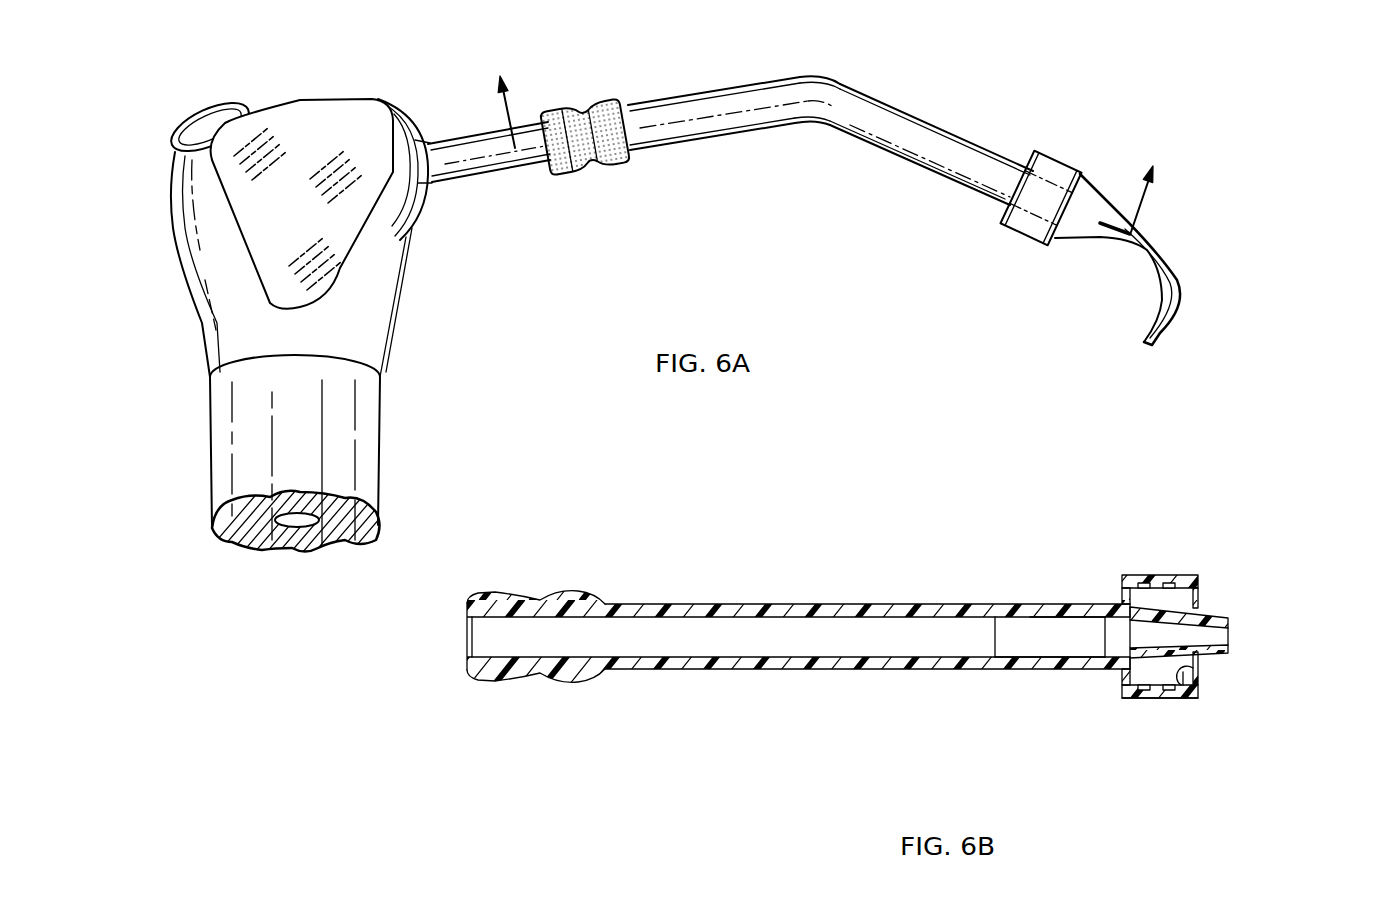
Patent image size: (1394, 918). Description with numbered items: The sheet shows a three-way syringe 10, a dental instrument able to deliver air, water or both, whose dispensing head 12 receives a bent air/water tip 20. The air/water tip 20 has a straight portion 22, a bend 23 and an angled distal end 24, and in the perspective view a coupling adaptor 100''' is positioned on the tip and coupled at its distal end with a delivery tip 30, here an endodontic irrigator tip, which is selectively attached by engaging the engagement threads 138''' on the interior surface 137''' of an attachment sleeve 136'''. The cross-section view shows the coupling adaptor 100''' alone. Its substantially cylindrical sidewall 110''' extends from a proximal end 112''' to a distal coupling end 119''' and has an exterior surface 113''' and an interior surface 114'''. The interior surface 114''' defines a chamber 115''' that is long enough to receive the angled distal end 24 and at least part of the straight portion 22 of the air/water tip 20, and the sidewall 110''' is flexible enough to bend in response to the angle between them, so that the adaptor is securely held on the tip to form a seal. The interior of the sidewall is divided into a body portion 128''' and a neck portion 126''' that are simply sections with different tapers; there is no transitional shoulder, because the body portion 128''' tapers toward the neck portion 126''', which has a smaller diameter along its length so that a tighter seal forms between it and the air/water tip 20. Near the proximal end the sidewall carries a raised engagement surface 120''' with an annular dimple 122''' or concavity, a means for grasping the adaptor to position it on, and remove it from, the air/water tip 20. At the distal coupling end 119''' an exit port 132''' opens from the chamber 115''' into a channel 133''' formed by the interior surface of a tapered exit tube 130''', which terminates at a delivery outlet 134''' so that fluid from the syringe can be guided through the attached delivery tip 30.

In FIG. 6A, the three-way syringe 10 is at (416, 78).
In FIG. 6A, the dispensing head 12 is at (338, 99).
In FIG. 6A, the air/water tip 20 is at (447, 178).
In FIG. 6A, the straight portion 22 is at (660, 143).
In FIG. 6A, the bend 23 is at (818, 78).
In FIG. 6A, the angled distal end 24 is at (934, 153).
In FIG. 6A, the delivery tip 30 is at (1140, 230).
In FIG. 6A, the coupling adaptor 100''' is at (946, 128).
In FIG. 6B, the coupling adaptor 100''' is at (782, 548).
In FIG. 6B, the sidewall 110''' is at (798, 571).
In FIG. 6B, the proximal end 112''' is at (422, 626).
In FIG. 6B, the exterior surface 113''' is at (997, 591).
In FIG. 6B, the interior surface 114''' is at (798, 688).
In FIG. 6B, the chamber 115''' is at (1011, 543).
In FIG. 6B, the distal coupling end 119''' is at (1078, 569).
In FIG. 6A, the raised engagement surface 120''' is at (585, 98).
In FIG. 6B, the raised engagement surface 120''' is at (536, 723).
In FIG. 6A, the annular dimple 122''' is at (617, 110).
In FIG. 6B, the annular dimple 122''' is at (535, 547).
In FIG. 6B, the neck portion 126''' is at (1089, 726).
In FIG. 6B, the body portion 128''' is at (1066, 585).
In FIG. 6B, the exit tube 130''' is at (1220, 603).
In FIG. 6B, the exit port 132''' is at (1076, 688).
In FIG. 6B, the channel 133''' is at (1243, 593).
In FIG. 6B, the delivery outlet 134''' is at (1243, 633).
In FIG. 6B, the attachment sleeve 136''' is at (1224, 750).
In FIG. 6B, the interior surface of attachment sleeve 137''' is at (1262, 712).
In FIG. 6B, the engagement threads 138''' is at (1263, 684).